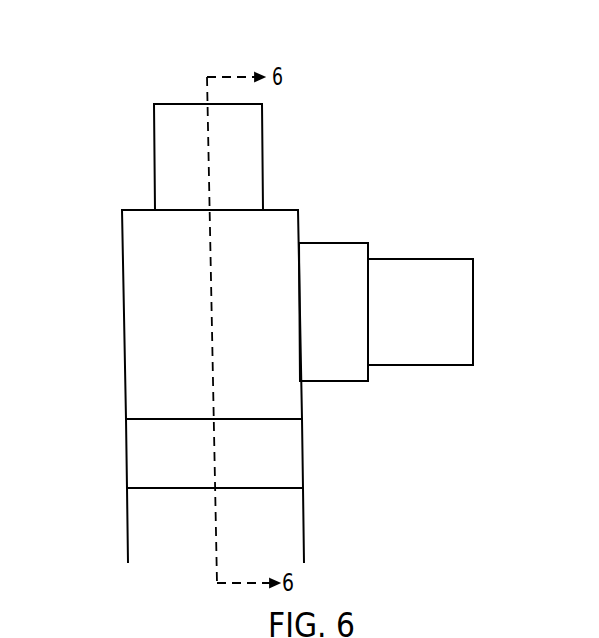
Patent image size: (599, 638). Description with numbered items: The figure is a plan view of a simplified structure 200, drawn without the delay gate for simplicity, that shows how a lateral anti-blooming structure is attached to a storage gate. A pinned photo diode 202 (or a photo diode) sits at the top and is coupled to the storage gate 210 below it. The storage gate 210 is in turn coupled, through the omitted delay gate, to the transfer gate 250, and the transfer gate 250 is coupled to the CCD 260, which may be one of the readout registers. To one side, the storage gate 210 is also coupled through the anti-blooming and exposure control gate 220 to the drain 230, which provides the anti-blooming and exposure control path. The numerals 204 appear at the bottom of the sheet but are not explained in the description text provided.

The simplified structure 200 is at (110, 58).
The pinned photo diode 202 is at (263, 143).
The substrate 204 is at (76, 626).
The storage gate 210 is at (277, 209).
The anti-blooming and exposure control gate 220 is at (352, 243).
The drain 230 is at (433, 259).
The transfer gate 250 is at (303, 460).
The CCD 260 is at (304, 522).